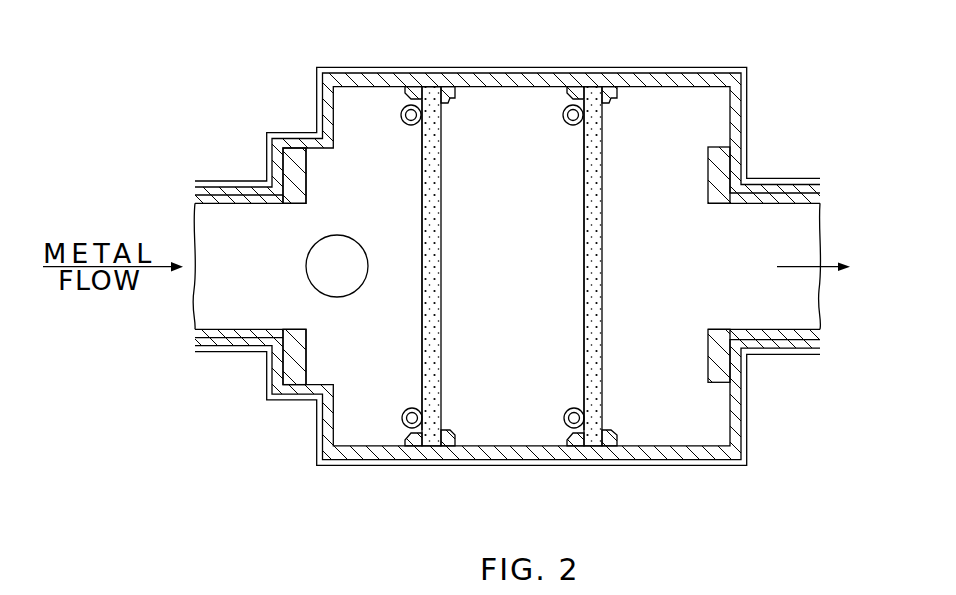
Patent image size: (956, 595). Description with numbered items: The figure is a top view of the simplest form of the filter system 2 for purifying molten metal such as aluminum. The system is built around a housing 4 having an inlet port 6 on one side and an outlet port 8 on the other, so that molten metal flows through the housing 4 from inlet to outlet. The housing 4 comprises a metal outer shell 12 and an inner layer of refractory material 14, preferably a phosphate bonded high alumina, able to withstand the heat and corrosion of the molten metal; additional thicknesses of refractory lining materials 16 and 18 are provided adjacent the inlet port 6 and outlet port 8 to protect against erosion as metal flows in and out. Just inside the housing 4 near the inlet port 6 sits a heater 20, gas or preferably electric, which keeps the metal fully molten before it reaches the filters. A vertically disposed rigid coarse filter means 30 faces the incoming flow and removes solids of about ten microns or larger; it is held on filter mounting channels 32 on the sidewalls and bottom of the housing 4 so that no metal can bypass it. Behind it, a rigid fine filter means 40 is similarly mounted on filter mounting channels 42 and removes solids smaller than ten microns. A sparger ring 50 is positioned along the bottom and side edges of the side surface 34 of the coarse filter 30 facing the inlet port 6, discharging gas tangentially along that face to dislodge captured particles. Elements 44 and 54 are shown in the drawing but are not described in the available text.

The filter system 2 is at (283, 98).
The housing 4 is at (750, 121).
The inlet port 6 is at (215, 300).
The outlet port 8 is at (803, 247).
The metal outer shell 12 is at (750, 425).
The inner layer of refractory material 14 is at (530, 88).
The additional refractory lining material 16 is at (298, 163).
The additional refractory lining material 18 is at (208, 196).
The heater 20 is at (306, 265).
The rigid coarse filter means 30 is at (441, 258).
The filter mounting channels 32 is at (430, 92).
The side surface of filter 34 is at (422, 210).
The rigid fine filter means 40 is at (602, 283).
The filter mounting channels 42 is at (609, 90).
The upstream face of second filter 44 is at (586, 317).
The sparger ring 50 is at (408, 410).
The seal ring 54 is at (566, 418).